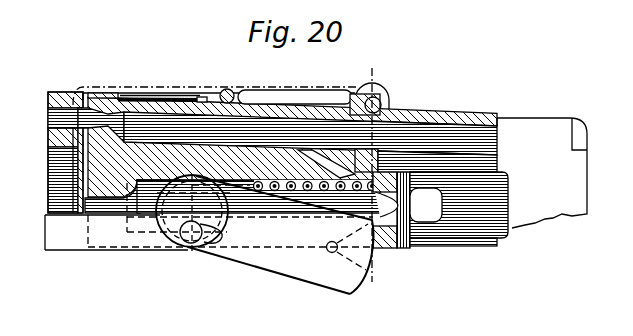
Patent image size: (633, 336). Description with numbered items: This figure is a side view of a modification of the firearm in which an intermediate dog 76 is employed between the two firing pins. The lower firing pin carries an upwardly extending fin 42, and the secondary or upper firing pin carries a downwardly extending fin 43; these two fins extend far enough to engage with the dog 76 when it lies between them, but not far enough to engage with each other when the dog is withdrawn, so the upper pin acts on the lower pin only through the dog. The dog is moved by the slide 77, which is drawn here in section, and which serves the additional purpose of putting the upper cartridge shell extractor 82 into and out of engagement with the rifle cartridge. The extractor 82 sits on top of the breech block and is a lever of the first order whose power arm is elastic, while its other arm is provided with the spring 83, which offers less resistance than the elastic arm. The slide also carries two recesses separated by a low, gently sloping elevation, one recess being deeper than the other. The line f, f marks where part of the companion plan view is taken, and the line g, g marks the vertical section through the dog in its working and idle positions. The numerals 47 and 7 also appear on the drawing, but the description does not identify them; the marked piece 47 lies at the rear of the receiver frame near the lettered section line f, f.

The section line f f is at (50, 122).
The section line g g is at (268, 170).
The upwardly extending fin 42 is at (498, 167).
The downwardly extending fin 43 is at (342, 157).
The stop 47 is at (580, 133).
The intermediate dog 76 is at (378, 152).
The slide 77 is at (385, 100).
The cartridge shell extractor 82 is at (202, 93).
The spring 83 is at (150, 99).
The frame 7 is at (629, 162).